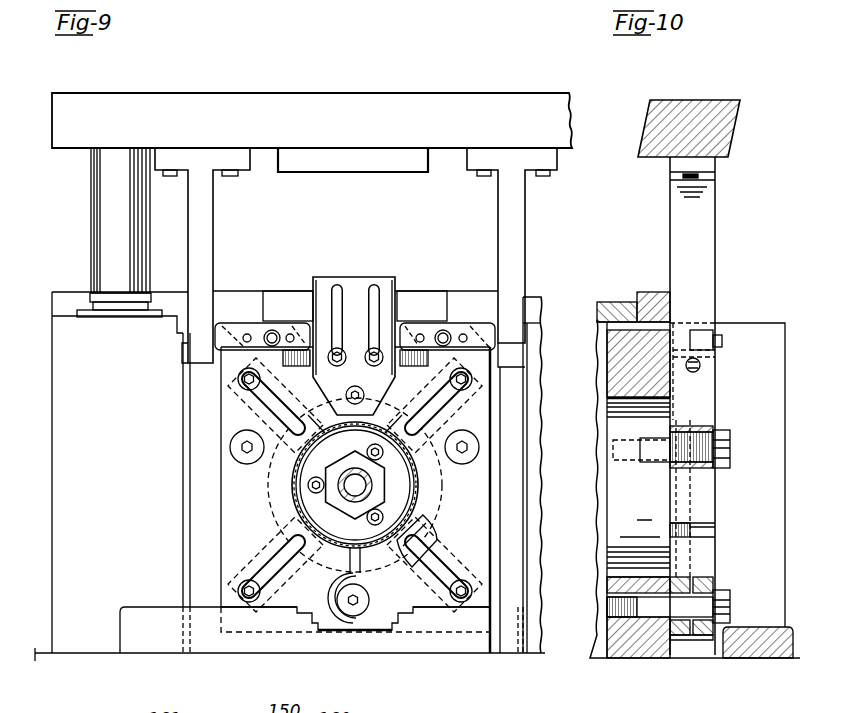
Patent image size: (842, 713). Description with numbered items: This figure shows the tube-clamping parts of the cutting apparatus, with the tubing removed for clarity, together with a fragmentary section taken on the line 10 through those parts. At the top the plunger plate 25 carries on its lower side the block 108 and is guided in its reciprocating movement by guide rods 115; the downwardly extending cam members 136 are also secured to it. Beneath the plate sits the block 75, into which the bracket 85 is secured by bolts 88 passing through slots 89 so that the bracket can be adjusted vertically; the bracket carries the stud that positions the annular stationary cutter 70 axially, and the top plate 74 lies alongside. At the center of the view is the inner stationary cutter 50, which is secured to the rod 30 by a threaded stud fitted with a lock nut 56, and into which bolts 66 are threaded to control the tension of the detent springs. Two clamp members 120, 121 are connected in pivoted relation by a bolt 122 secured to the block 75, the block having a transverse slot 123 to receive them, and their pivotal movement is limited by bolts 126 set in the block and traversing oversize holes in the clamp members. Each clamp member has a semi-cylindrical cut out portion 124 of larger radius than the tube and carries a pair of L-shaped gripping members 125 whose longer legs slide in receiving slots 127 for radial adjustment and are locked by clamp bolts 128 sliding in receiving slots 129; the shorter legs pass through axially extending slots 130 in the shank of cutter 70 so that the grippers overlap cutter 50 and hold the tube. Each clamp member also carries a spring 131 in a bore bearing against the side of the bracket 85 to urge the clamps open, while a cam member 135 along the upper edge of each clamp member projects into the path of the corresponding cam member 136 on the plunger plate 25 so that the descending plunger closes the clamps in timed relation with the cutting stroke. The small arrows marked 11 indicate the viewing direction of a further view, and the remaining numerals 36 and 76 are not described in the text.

In FIG. 9, the section line 10— 10 is at (442, 240).
In FIG. 9, the direction arrow 11 is at (386, 450).
In FIG. 9, the plunger plate 25 is at (298, 100).
In FIG. 10, the plunger plate 25 is at (679, 104).
In FIG. 9, the rod 30 is at (372, 491).
In FIG. 9, the bolt 36 is at (347, 392).
In FIG. 9, the stationary cutter 50 is at (300, 486).
In FIG. 9, the lock nut 56 is at (330, 498).
In FIG. 9, the bolt 66 is at (367, 450).
In FIG. 9, the stationary cutter 70 is at (430, 520).
In FIG. 9, the top plate 74 is at (535, 300).
In FIG. 9, the block 75 is at (60, 366).
In FIG. 10, the block 75 is at (635, 659).
In FIG. 9, the top strip 76 is at (65, 295).
In FIG. 9, the bracket 85 is at (357, 283).
In FIG. 9, the bolts 88 is at (371, 352).
In FIG. 9, the slots 89 is at (334, 290).
In FIG. 9, the block 108 is at (325, 163).
In FIG. 9, the guide rods 115 is at (95, 206).
In FIG. 9, the clamp member 120 is at (226, 413).
In FIG. 10, the clamp member 120 is at (687, 630).
In FIG. 9, the clamp member 121 is at (485, 430).
In FIG. 10, the clamp member 121 is at (717, 397).
In FIG. 9, the bolt 122 is at (348, 614).
In FIG. 10, the bolt 122 is at (717, 605).
In FIG. 9, the transverse slot 123 is at (376, 648).
In FIG. 10, the transverse slot 123 is at (705, 652).
In FIG. 9, the semi-cylindrical cut out portions 124 is at (290, 512).
In FIG. 10, the semi-cylindrical cut out portions 124 is at (703, 495).
In FIG. 9, the gripping members 125 is at (318, 410).
In FIG. 9, the bolts 126 is at (240, 448).
In FIG. 10, the bolts 126 is at (730, 450).
In FIG. 9, the receiving slot 127 is at (248, 567).
In FIG. 10, the receiving slot 127 is at (690, 530).
In FIG. 9, the clamp bolt 128 is at (250, 602).
In FIG. 9, the receiving slot 129 is at (258, 576).
In FIG. 9, the axially extending slots 130 is at (398, 562).
In FIG. 9, the spring 131 is at (302, 330).
In FIG. 10, the spring 131 is at (700, 363).
In FIG. 9, the cam member 135 is at (240, 330).
In FIG. 10, the cam member 135 is at (705, 337).
In FIG. 9, the cam member 136 is at (195, 349).
In FIG. 10, the cam member 136 is at (705, 259).